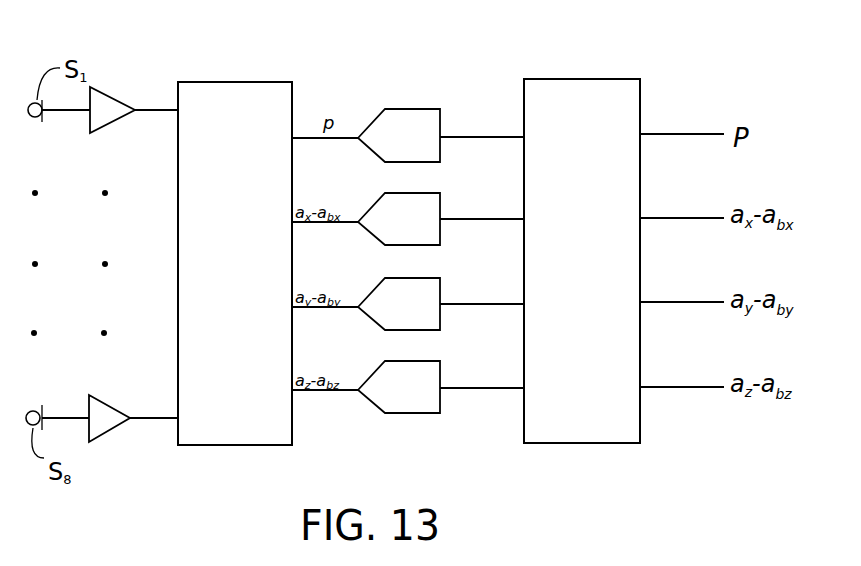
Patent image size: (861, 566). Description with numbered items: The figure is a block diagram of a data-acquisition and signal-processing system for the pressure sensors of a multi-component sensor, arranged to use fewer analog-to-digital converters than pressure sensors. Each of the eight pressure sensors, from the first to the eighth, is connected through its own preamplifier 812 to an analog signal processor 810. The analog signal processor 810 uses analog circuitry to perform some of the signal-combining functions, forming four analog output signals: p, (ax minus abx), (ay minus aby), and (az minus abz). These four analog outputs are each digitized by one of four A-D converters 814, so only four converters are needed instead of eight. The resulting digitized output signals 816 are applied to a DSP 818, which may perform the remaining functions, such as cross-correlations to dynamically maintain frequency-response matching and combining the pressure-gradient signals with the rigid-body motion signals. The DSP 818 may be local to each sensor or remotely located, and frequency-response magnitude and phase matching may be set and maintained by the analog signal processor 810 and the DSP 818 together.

The analog signal processor 810 is at (241, 270).
The preamplifier 812 is at (104, 101).
The A-D converter 814 is at (403, 120).
The digitized output signals 816 is at (461, 139).
The DSP 818 is at (597, 272).